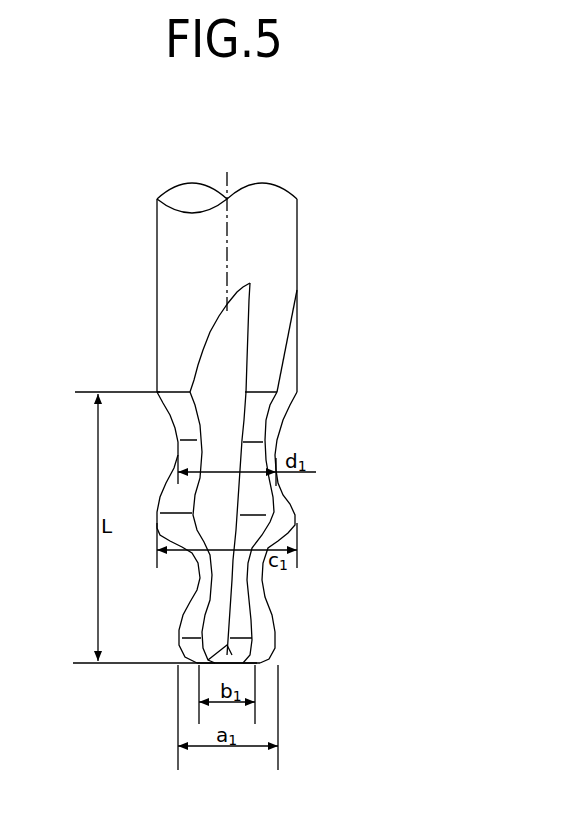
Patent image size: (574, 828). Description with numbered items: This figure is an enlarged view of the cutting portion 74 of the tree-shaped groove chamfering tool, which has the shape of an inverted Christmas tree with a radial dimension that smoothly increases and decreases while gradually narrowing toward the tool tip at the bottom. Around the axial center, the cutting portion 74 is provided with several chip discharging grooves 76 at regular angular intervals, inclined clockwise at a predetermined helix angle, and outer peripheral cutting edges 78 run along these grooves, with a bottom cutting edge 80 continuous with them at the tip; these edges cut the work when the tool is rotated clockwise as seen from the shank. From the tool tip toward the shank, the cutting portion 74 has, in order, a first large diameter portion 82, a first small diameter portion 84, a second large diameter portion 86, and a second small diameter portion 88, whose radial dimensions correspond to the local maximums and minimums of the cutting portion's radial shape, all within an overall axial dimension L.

The cutting portion 74 is at (168, 673).
The chip discharging grooves 76 is at (220, 488).
The outer peripheral cutting edges 78 is at (214, 608).
The bottom cutting edge 80 is at (247, 664).
The first large diameter portion 82 is at (278, 643).
The first small diameter portion 84 is at (258, 582).
The second large diameter portion 86 is at (298, 515).
The second small diameter portion 88 is at (278, 438).